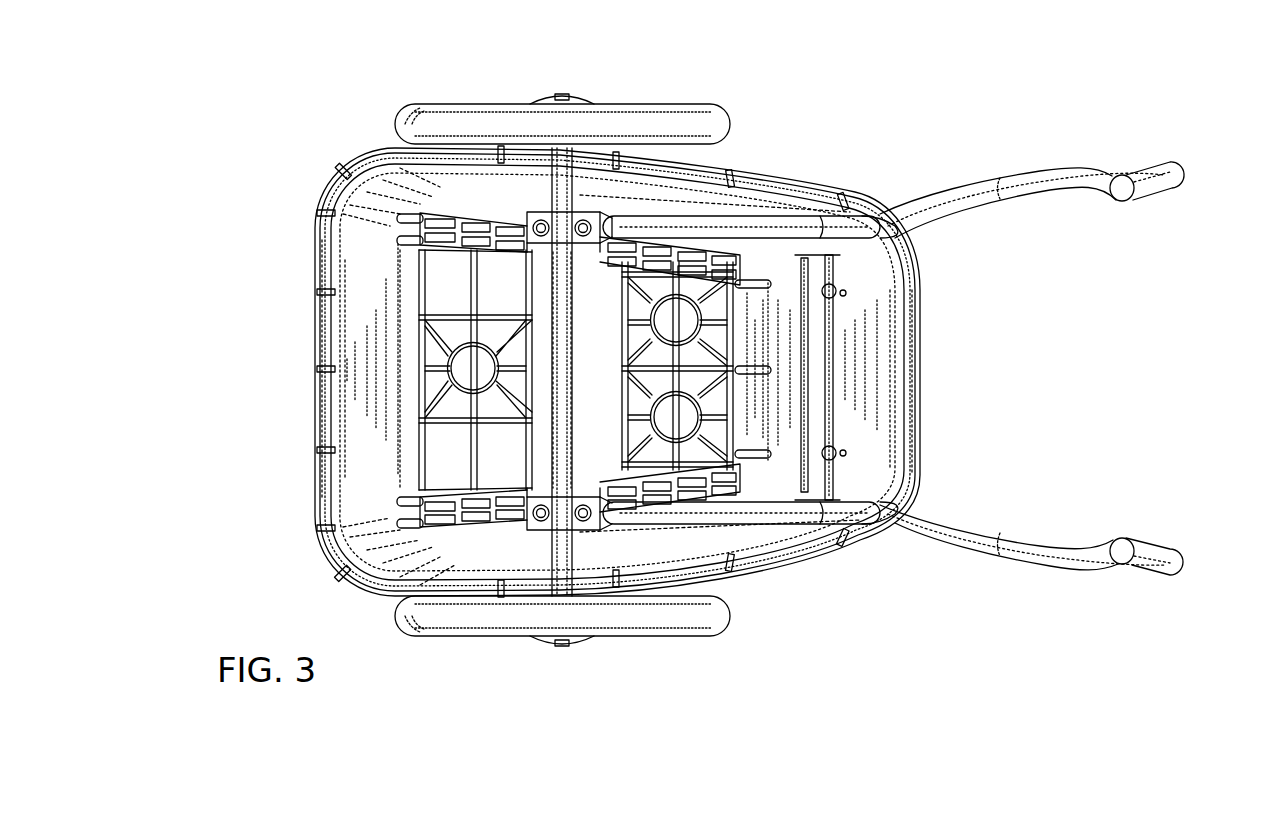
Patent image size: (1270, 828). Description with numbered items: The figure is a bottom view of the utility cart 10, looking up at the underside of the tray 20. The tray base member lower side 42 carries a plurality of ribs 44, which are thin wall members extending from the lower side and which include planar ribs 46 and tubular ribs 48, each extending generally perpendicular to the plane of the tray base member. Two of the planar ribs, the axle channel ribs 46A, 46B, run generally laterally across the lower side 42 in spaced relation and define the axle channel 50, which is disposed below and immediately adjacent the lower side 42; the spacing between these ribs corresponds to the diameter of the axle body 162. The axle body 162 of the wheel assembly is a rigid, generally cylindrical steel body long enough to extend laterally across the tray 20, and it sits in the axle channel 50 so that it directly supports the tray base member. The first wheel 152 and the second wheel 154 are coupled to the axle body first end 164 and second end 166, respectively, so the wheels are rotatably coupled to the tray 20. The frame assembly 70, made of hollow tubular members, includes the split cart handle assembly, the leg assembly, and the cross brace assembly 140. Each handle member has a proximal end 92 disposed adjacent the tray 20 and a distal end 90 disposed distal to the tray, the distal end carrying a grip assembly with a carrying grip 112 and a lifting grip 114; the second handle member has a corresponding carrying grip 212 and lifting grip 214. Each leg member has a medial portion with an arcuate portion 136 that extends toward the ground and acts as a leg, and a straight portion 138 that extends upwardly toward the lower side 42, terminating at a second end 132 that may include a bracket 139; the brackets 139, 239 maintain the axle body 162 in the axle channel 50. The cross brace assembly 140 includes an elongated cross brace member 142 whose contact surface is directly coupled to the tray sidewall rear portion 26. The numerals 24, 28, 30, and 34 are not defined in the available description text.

The utility cart 10 is at (348, 85).
The tray 20 is at (339, 348).
The tray side wall 24 is at (357, 426).
The tray sidewall rear portion 26 is at (875, 330).
The lower handle tube 28 is at (750, 540).
The upper handle tube 30 is at (745, 200).
The rim tube 34 is at (338, 185).
The tray base member lower side 42 is at (455, 270).
The ribs 44 is at (290, 275).
The planar ribs 46 is at (400, 487).
The axle channel rib 46A is at (570, 332).
The axle channel rib 46B is at (570, 452).
The tubular ribs 48 is at (465, 397).
The axle channel 50 is at (585, 199).
The frame assembly 70 is at (997, 152).
The distal end 90 is at (1120, 202).
The proximal end 92 is at (612, 228).
The carrying grip 112 is at (1060, 555).
The lifting grip 114 is at (1148, 547).
The second end 132 is at (655, 232).
The arcuate portion 136 is at (818, 230).
The straight portion 138 is at (815, 222).
The bracket 139 is at (540, 222).
The cross brace assembly 140 is at (862, 553).
The cross brace member 142 is at (820, 395).
The first wheel 152 is at (505, 620).
The second wheel 154 is at (455, 120).
The axle body 162 is at (560, 328).
The first end 164 is at (540, 265).
The second end 166 is at (560, 497).
The carrying grip 212 is at (1073, 170).
The lifting grip 214 is at (1152, 194).
The bracket 239 is at (560, 600).